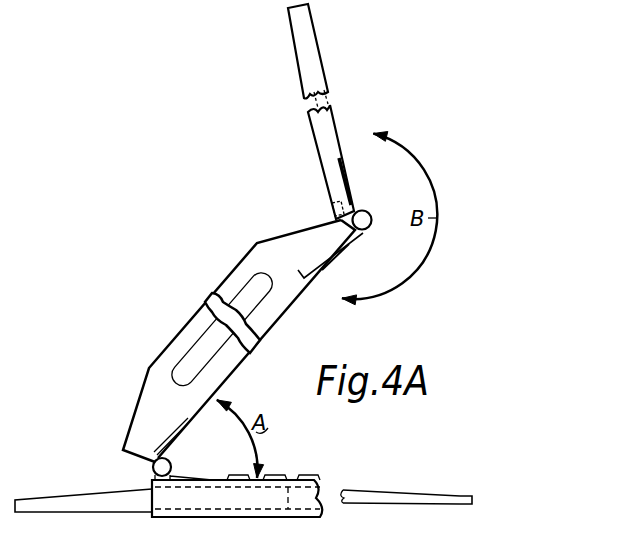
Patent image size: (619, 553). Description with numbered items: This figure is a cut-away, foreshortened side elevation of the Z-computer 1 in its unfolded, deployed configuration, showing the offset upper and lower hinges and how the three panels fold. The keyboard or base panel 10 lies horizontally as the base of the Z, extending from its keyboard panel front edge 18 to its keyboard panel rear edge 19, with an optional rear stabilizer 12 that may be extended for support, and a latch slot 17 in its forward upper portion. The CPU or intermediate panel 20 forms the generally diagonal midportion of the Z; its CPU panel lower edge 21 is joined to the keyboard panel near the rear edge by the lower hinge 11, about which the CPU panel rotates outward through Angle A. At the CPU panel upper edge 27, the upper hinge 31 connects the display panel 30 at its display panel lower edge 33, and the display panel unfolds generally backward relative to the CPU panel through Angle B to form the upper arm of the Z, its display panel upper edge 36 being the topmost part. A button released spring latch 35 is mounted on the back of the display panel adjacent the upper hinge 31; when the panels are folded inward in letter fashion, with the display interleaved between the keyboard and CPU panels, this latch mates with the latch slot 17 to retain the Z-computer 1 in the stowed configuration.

The Z-computer 1 is at (252, 213).
The keyboard or base panel 10 is at (330, 487).
The lower hinge 11 is at (172, 466).
The rear stabilizer 12 is at (65, 496).
The latch slot 17 is at (468, 492).
The keyboard panel front edge 18 is at (472, 503).
The keyboard panel rear edge 19 is at (150, 481).
The CPU or intermediate panel 20 is at (206, 311).
The CPU panel lower edge 21 is at (174, 441).
The CPU panel upper edge 27 is at (365, 232).
The display panel 30 is at (310, 123).
The upper hinge 31 is at (371, 212).
The display panel lower edge 33 is at (353, 208).
The button released spring latch 35 is at (332, 212).
The display panel upper edge 36 is at (286, 12).